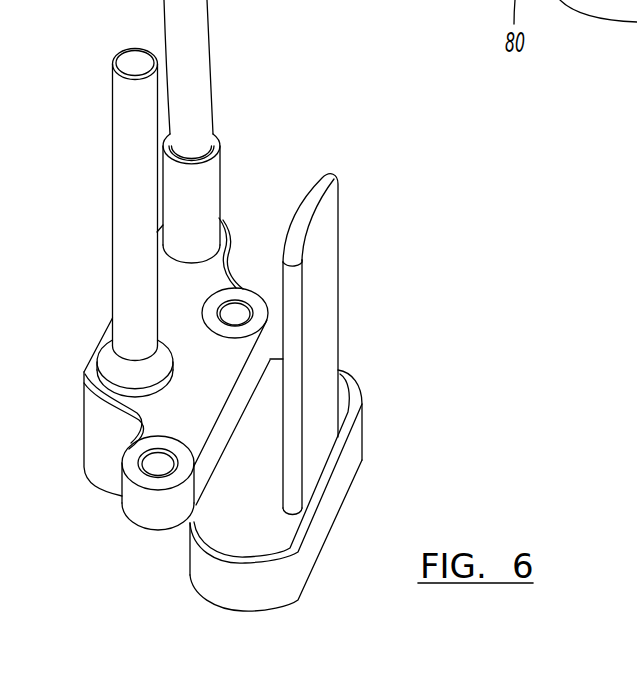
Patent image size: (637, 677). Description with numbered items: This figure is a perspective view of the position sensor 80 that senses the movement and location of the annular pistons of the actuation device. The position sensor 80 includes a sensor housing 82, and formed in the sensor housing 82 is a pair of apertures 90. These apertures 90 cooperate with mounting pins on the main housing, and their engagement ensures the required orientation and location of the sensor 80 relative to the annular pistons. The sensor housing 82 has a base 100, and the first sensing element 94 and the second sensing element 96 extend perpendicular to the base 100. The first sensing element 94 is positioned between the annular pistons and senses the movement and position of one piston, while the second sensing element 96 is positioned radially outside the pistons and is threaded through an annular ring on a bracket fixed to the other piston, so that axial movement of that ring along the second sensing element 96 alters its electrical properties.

The position sensor 80 is at (263, 305).
The sensor housing 82 is at (190, 567).
The apertures 90 is at (233, 312).
The first sensing element 94 is at (320, 270).
The second sensing element 96 is at (130, 127).
The base 100 is at (256, 531).